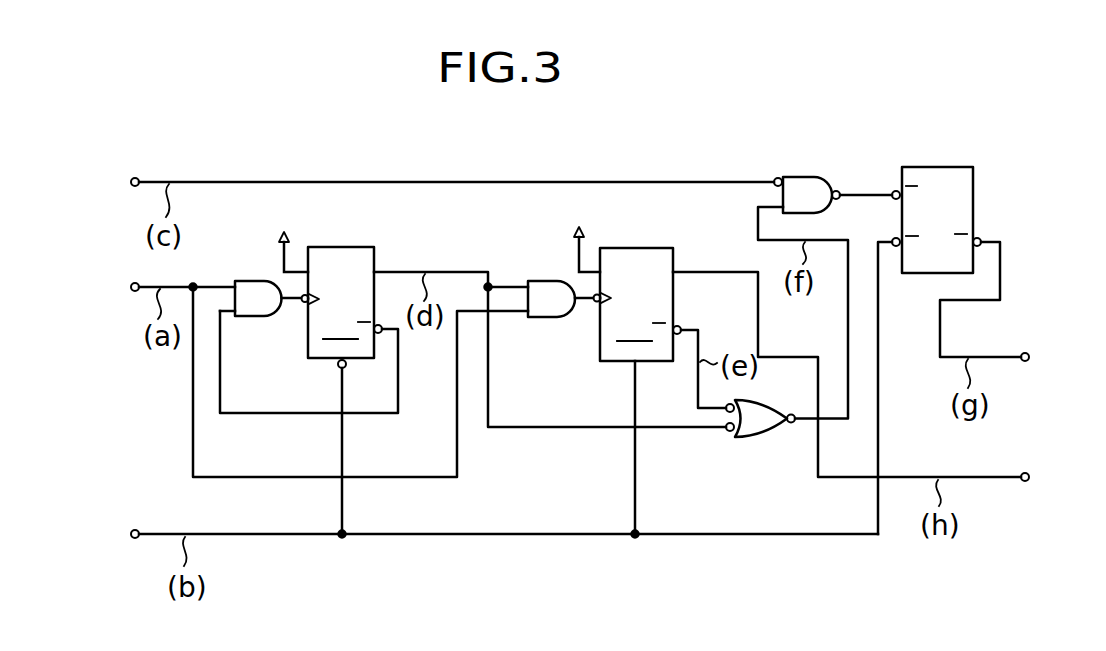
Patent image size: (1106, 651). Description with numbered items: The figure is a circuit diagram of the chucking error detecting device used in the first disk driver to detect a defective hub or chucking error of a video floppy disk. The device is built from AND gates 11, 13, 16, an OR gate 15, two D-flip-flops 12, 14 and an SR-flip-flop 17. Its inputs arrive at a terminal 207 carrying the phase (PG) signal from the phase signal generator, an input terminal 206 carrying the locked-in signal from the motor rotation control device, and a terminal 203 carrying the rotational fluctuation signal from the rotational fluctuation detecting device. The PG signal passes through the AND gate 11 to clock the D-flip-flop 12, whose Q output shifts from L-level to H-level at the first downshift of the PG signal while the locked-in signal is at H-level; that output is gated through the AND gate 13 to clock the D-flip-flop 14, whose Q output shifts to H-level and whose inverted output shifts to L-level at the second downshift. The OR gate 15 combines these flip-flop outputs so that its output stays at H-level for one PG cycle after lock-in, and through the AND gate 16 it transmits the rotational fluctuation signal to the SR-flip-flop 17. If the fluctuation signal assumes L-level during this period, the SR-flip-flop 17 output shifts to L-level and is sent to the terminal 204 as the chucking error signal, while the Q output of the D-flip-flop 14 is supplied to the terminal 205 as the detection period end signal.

The AND gate 11 is at (250, 280).
The D-flip-flop 12 is at (334, 247).
The AND gate 13 is at (540, 280).
The D-flip-flop 14 is at (641, 248).
The OR gate 15 is at (750, 440).
The AND gate 16 is at (800, 177).
The SR-flip-flop 17 is at (925, 167).
The terminal 203 is at (421, 182).
The terminal 204 is at (1055, 359).
The terminal 205 is at (1055, 479).
The input terminal 206 is at (473, 534).
The terminal 207 is at (298, 373).